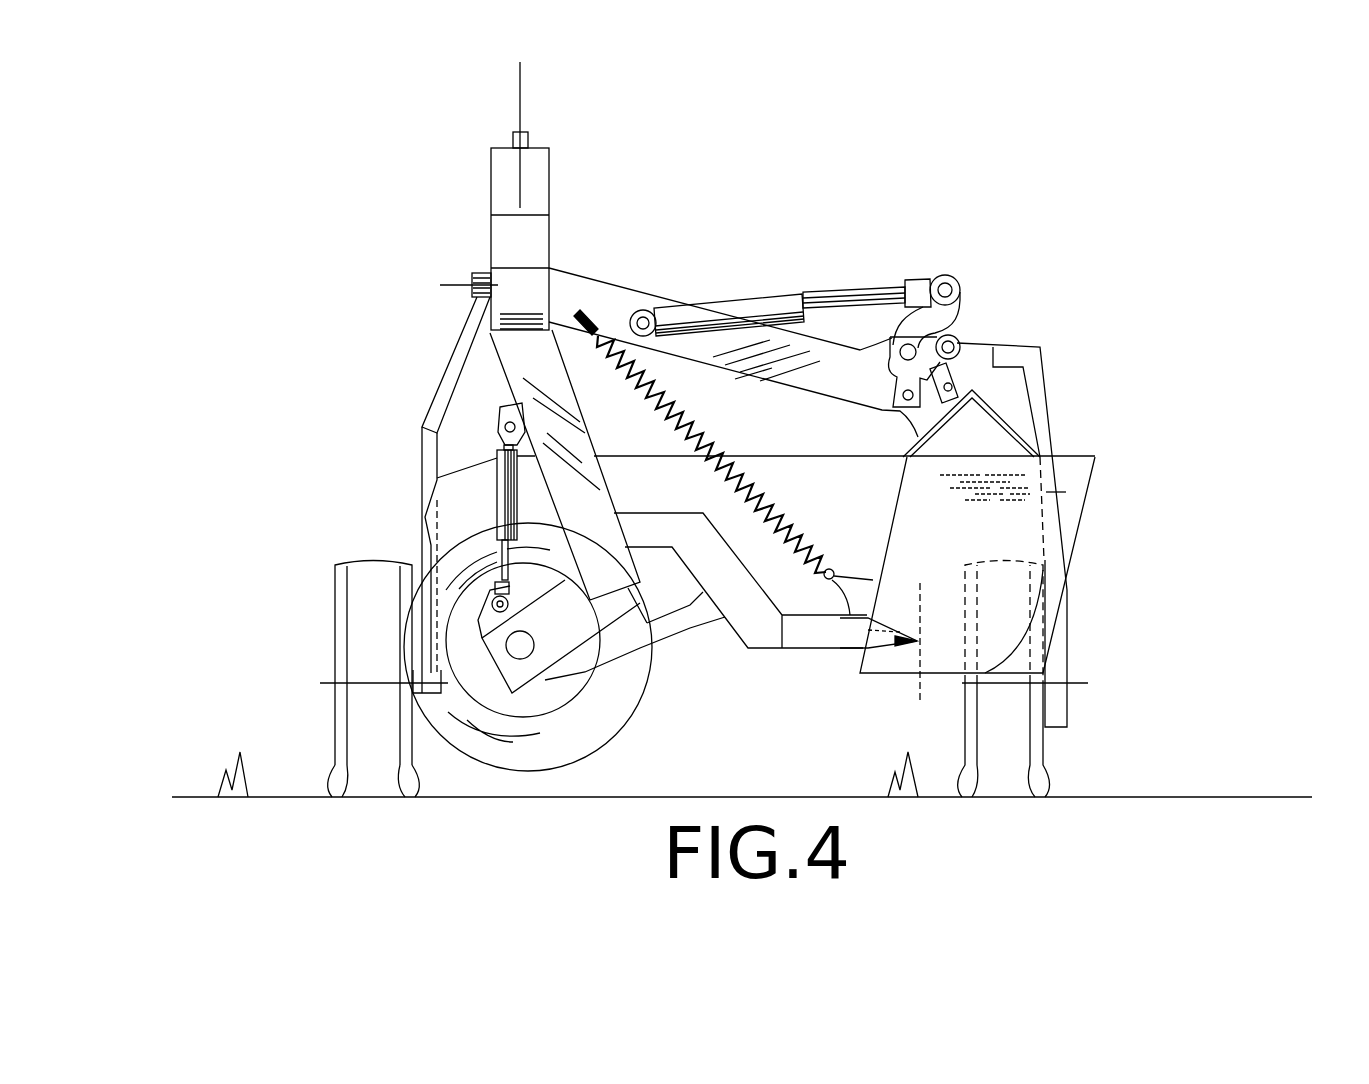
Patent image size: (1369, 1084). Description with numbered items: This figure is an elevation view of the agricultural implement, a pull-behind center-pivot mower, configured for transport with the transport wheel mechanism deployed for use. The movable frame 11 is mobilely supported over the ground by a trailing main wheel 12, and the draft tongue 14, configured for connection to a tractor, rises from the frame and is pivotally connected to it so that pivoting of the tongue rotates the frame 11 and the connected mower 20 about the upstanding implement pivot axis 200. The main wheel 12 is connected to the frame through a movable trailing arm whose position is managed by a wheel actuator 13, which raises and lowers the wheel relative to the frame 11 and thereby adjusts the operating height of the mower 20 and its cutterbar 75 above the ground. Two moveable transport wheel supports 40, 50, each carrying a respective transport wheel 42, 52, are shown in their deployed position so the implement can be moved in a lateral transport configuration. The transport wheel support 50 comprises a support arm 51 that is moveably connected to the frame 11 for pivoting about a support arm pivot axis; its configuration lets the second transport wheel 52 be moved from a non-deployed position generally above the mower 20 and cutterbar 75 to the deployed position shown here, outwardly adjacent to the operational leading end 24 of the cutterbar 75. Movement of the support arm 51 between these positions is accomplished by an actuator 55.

The upstanding implement pivot axis 200 is at (518, 117).
The draft tongue 14 is at (490, 192).
The movable frame 11 is at (572, 282).
The actuator 55 is at (713, 313).
The transport wheel support 50 is at (1068, 265).
The support arm 51 is at (1043, 423).
The mower 20 is at (1123, 449).
The cutterbar 75 is at (911, 574).
The operational leading end 24 is at (893, 698).
The second transport wheel 52 is at (1007, 760).
The wheel actuator 13 is at (497, 497).
The transport wheel support 40 is at (270, 357).
The trailing main wheel 12 is at (595, 700).
The transport wheel 42 is at (360, 615).